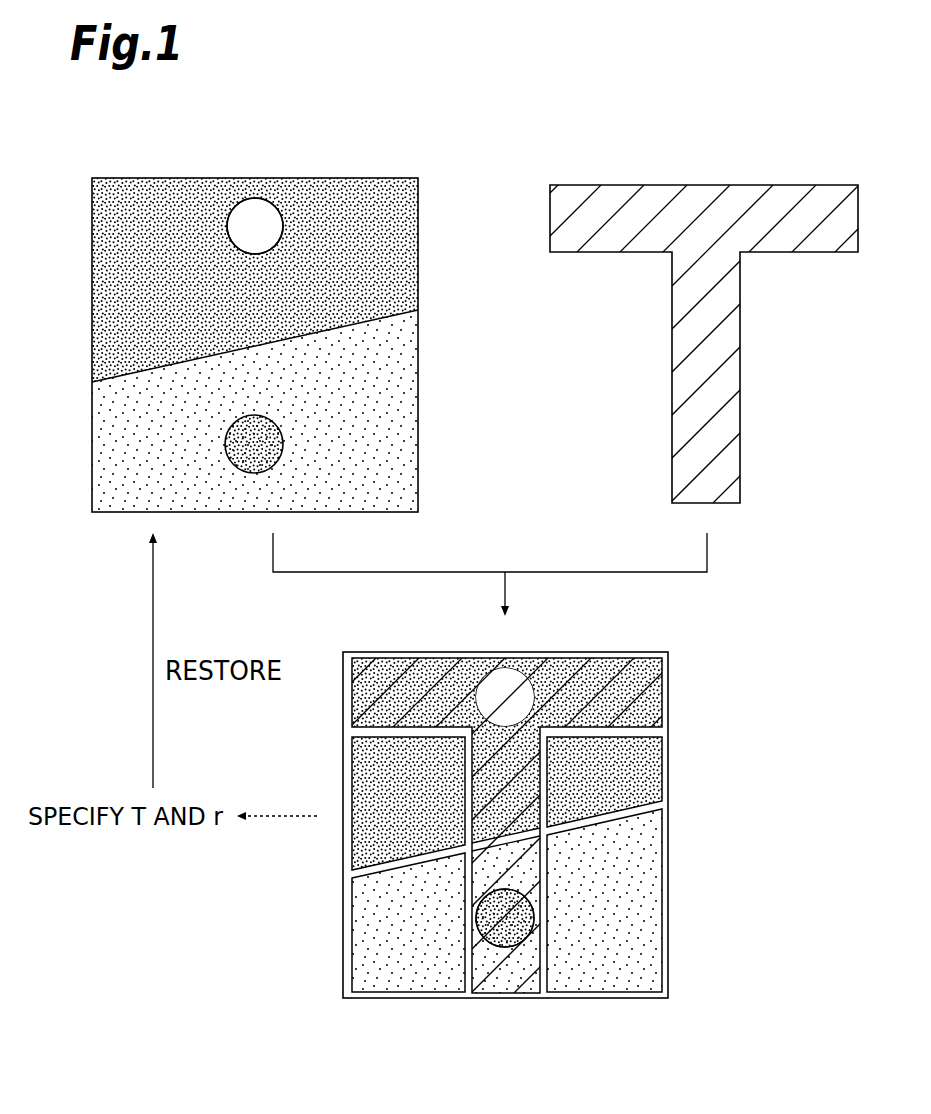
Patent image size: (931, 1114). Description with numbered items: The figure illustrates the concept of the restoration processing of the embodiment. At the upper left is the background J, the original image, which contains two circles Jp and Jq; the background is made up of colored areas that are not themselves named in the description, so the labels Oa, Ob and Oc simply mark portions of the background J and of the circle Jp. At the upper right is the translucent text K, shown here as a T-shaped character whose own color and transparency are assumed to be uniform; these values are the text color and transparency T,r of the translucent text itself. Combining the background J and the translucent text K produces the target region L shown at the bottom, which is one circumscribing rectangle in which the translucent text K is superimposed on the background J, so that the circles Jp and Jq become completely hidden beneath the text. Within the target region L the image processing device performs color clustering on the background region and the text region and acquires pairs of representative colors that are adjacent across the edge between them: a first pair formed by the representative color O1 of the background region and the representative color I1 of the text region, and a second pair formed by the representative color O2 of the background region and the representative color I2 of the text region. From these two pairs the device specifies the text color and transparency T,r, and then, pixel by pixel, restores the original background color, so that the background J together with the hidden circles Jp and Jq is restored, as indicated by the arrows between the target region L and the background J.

The background J is at (424, 203).
The circle Jp is at (239, 190).
The circle Jq is at (239, 478).
The first object region Oa is at (383, 257).
The second object region Ob is at (372, 400).
The third object region (hole) Oc is at (262, 220).
The translucent text K is at (830, 262).
The text color and transparency T,r is at (718, 380).
The target region L is at (614, 644).
The representative color of the text region I1 is at (636, 673).
The representative color of the text region I2 is at (517, 978).
The representative color of the background region O1 is at (630, 773).
The representative color of the background region O2 is at (632, 917).